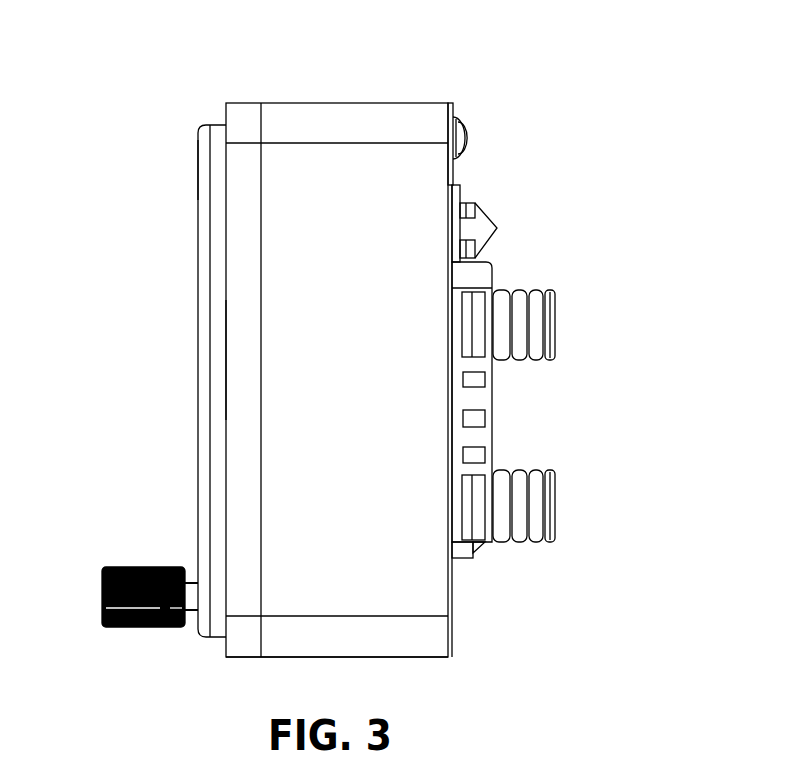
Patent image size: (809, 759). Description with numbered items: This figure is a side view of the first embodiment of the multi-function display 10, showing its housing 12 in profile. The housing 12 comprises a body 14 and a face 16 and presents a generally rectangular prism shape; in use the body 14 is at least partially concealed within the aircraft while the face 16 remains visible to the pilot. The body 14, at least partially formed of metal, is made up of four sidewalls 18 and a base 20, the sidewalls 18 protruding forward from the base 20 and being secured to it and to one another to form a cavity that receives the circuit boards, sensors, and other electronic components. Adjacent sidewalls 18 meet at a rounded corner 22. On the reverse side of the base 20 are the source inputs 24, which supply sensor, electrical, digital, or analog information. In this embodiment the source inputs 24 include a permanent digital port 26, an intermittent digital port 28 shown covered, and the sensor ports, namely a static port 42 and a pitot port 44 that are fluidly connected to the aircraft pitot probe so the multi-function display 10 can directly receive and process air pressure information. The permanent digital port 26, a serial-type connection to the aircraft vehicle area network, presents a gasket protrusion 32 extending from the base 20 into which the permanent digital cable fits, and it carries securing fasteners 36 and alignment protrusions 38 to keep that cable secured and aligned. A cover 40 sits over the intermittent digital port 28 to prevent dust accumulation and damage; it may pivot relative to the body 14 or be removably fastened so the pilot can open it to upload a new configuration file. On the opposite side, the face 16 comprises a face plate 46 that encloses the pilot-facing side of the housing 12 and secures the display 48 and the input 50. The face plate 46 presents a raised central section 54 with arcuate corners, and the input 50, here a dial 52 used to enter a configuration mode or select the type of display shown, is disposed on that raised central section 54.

The multi-function display 10 is at (106, 50).
The housing 12 is at (515, 149).
The body 14 is at (290, 103).
The face 16 is at (118, 382).
The sidewalls 18 is at (455, 612).
The base 20 is at (455, 583).
The rounded corner 22 is at (360, 125).
The source inputs 24 is at (619, 417).
The permanent digital port 26 is at (493, 402).
The intermittent digital port 28 is at (474, 126).
The gasket protrusion 32 is at (485, 277).
The securing fasteners 36 is at (466, 205).
The alignment protrusions 38 is at (482, 226).
The cover 40 is at (452, 103).
The static port 42 is at (551, 319).
The pitot port 44 is at (551, 513).
The face plate 46 is at (240, 113).
The display 48 is at (178, 278).
The input 50 is at (114, 572).
The dial 52 is at (135, 567).
The raised central section 54 is at (198, 162).